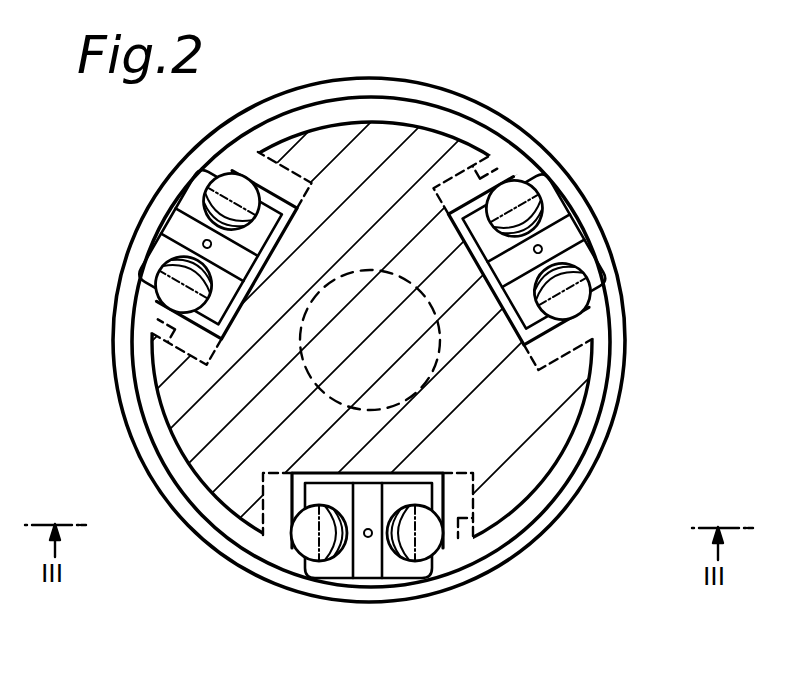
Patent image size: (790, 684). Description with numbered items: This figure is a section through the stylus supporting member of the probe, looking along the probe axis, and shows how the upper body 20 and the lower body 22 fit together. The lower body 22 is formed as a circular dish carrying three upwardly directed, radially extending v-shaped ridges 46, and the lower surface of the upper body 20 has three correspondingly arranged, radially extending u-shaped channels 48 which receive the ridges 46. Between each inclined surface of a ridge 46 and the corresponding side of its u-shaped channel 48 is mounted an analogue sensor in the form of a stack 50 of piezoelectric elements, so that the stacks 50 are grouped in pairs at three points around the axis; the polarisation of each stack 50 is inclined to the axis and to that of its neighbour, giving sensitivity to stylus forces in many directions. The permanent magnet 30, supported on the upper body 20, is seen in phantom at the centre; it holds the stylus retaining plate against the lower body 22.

The upper body 20 is at (533, 460).
The lower body 22 is at (614, 387).
The permanent magnet 30 is at (327, 285).
The v-shaped ridges 46 is at (325, 493).
The u-shaped channels 48 is at (466, 534).
The stack of piezoelectric elements 50 is at (404, 576).